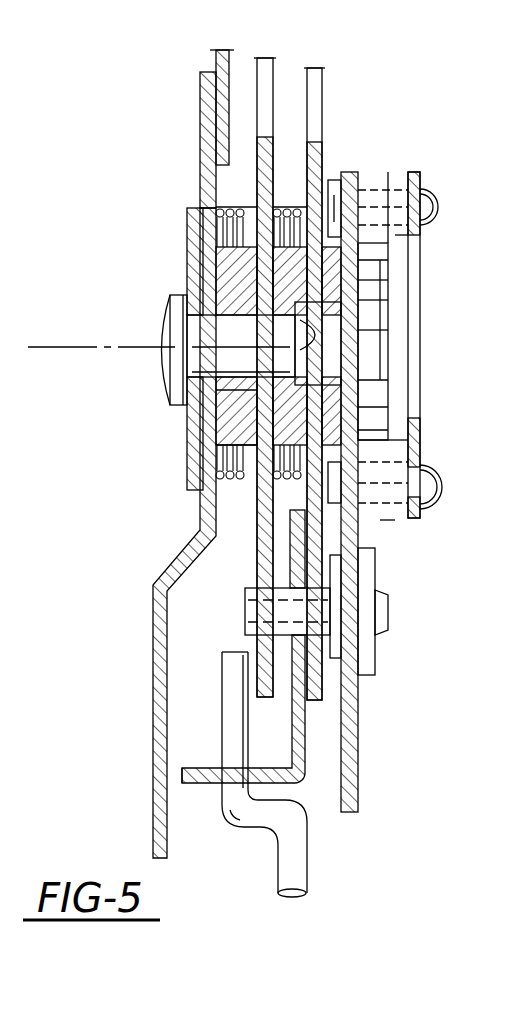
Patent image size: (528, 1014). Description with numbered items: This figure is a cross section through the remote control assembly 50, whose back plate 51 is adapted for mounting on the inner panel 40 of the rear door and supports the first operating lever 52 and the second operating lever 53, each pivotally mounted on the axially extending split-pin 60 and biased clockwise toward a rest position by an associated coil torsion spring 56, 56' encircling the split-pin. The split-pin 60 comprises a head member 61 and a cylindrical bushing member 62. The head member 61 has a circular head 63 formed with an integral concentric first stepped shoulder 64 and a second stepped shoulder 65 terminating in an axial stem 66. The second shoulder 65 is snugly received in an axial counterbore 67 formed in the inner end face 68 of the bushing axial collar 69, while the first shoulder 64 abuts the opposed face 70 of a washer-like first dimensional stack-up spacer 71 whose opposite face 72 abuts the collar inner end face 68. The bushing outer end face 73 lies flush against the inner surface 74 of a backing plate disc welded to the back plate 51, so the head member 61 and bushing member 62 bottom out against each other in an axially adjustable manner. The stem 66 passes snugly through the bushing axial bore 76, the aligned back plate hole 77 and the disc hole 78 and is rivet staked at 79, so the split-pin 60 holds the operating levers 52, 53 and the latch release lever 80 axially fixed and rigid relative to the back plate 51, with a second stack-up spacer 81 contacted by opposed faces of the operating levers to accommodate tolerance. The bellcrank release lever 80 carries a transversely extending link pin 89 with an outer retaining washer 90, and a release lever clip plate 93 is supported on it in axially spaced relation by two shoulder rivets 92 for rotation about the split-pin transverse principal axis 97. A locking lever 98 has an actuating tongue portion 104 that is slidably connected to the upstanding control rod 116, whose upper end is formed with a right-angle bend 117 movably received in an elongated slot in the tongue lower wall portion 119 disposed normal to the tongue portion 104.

The inner panel 40 is at (200, 56).
The remote control assembly 50 is at (185, 158).
The back plate 51 is at (195, 183).
The first operating lever 52 is at (333, 86).
The second operating lever 53 is at (292, 62).
The coil torsion spring 56 is at (294, 170).
The coil torsion spring 56' is at (193, 394).
The split-pin 60 is at (400, 343).
The head member 61 is at (392, 364).
The cylindrical bushing member 62 is at (200, 510).
The circular head 63 is at (428, 235).
The first stepped shoulder 64 is at (390, 290).
The second stepped shoulder 65 is at (345, 312).
The axial stem 66 is at (187, 383).
The axial counterbore 67 is at (385, 322).
The inner end face 68 is at (383, 432).
The axial collar 69 is at (400, 270).
The opposed face 70 is at (413, 440).
The first dimensional stack-up spacer 71 is at (412, 255).
The opposite face 72 is at (360, 212).
The bushing outer end face 73 is at (173, 397).
The inner surface 74 is at (205, 260).
The bushing axial bore 76 is at (190, 340).
The back plate hole 77 is at (195, 410).
The disc hole 78 is at (168, 330).
The rivet stake 79 is at (160, 356).
The latch release lever 80 is at (353, 166).
The second stack-up spacer 81 is at (198, 445).
The link pin 89 is at (247, 605).
The outer retaining washer 90 is at (368, 598).
The shoulder rivets 92 is at (432, 195).
The release lever clip plate 93 is at (426, 449).
The transverse principal axis 97 is at (48, 347).
The locking lever 98 is at (343, 697).
The actuating tongue portion 104 is at (312, 728).
The control rod 116 is at (300, 847).
The right-angle bend 117 is at (253, 818).
The tongue lower wall portion 119 is at (182, 783).